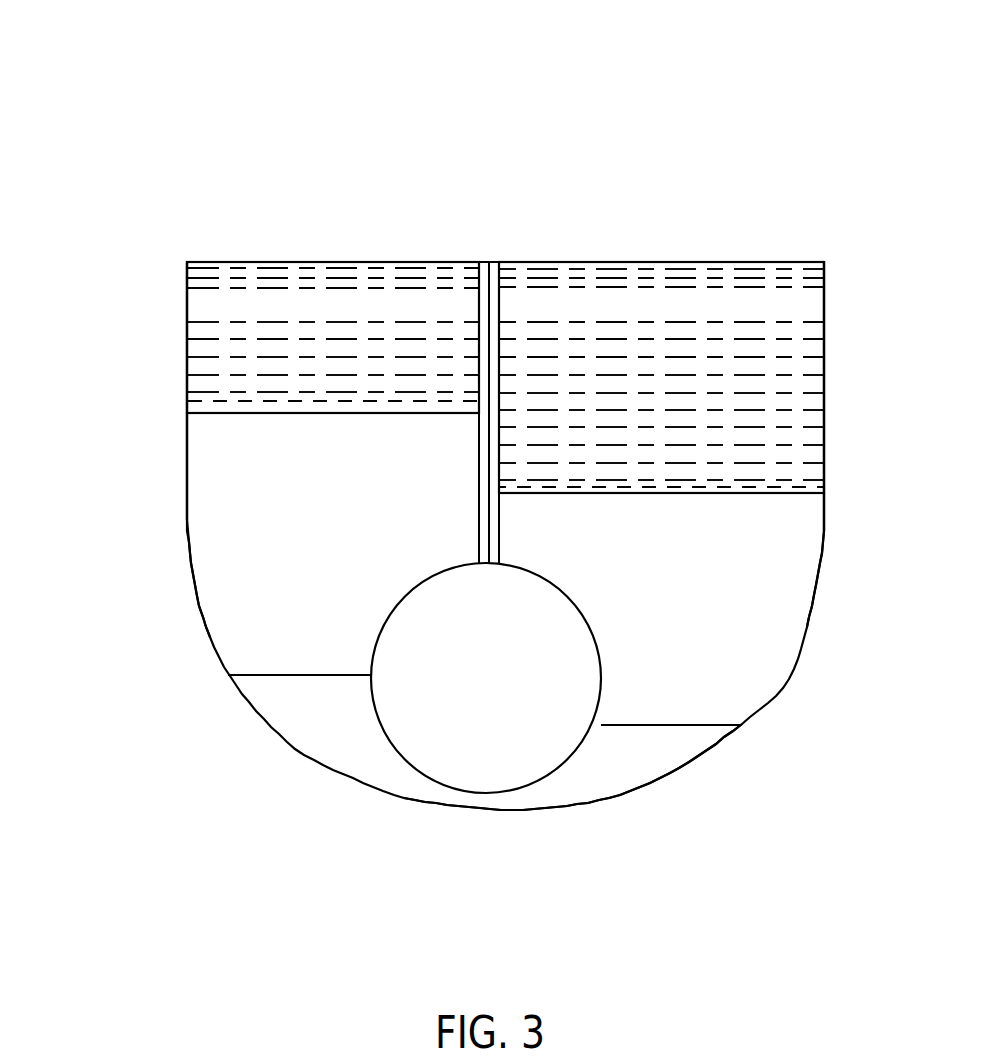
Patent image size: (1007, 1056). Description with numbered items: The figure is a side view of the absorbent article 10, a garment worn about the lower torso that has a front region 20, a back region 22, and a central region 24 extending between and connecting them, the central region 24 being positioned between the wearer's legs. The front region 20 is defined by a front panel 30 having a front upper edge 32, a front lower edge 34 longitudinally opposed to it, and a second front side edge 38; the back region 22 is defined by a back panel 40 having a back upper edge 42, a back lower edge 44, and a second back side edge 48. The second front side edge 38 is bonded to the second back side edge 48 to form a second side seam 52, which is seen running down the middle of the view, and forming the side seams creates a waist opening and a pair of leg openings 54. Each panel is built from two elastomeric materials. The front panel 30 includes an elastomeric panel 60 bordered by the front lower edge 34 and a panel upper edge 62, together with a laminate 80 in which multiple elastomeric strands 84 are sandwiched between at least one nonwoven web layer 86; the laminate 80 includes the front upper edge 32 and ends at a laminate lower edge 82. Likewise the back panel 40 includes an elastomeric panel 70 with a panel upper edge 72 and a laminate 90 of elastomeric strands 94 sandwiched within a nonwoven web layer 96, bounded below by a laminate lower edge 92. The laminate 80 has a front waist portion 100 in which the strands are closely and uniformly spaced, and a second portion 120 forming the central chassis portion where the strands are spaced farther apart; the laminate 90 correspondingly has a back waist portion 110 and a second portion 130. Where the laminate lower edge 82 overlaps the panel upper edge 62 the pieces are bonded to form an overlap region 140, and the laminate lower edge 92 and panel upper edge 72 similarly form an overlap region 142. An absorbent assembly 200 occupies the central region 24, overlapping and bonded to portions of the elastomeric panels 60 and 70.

The absorbent article 10 is at (505, 414).
The front region 20 is at (263, 337).
The back region 22 is at (712, 377).
The central region 24 is at (520, 852).
The front panel 30 is at (148, 466).
The front upper edge 32 is at (171, 340).
The front lower edge 34 is at (244, 674).
The second front side edge 38 is at (447, 412).
The back panel 40 is at (834, 576).
The back upper edge 42 is at (840, 348).
The back lower edge 44 is at (721, 716).
The second back side edge 48 is at (536, 412).
The second side seam 52 is at (507, 348).
The leg openings 54 is at (447, 698).
The elastomeric panel 60 is at (153, 578).
The panel upper edge 62 is at (333, 448).
The elastomeric panel 70 is at (848, 519).
The panel upper edge 72 is at (661, 537).
The laminate 80 is at (261, 280).
The laminate lower edge 82 is at (288, 481).
The elastomeric strands 84 is at (286, 242).
The nonwoven web layer 86 is at (333, 224).
The laminate 90 is at (661, 286).
The laminate lower edge 92 is at (661, 527).
The elastomeric strands 94 is at (661, 250).
The nonwoven web layer 96 is at (700, 306).
The front waist portion 100 is at (185, 288).
The back waist portion 110 is at (830, 290).
The second portion of laminate 120 is at (185, 388).
The second portion of laminate 130 is at (830, 473).
The overlap region 140 is at (185, 415).
The overlap region 142 is at (830, 493).
The absorbent assembly 200 is at (690, 801).